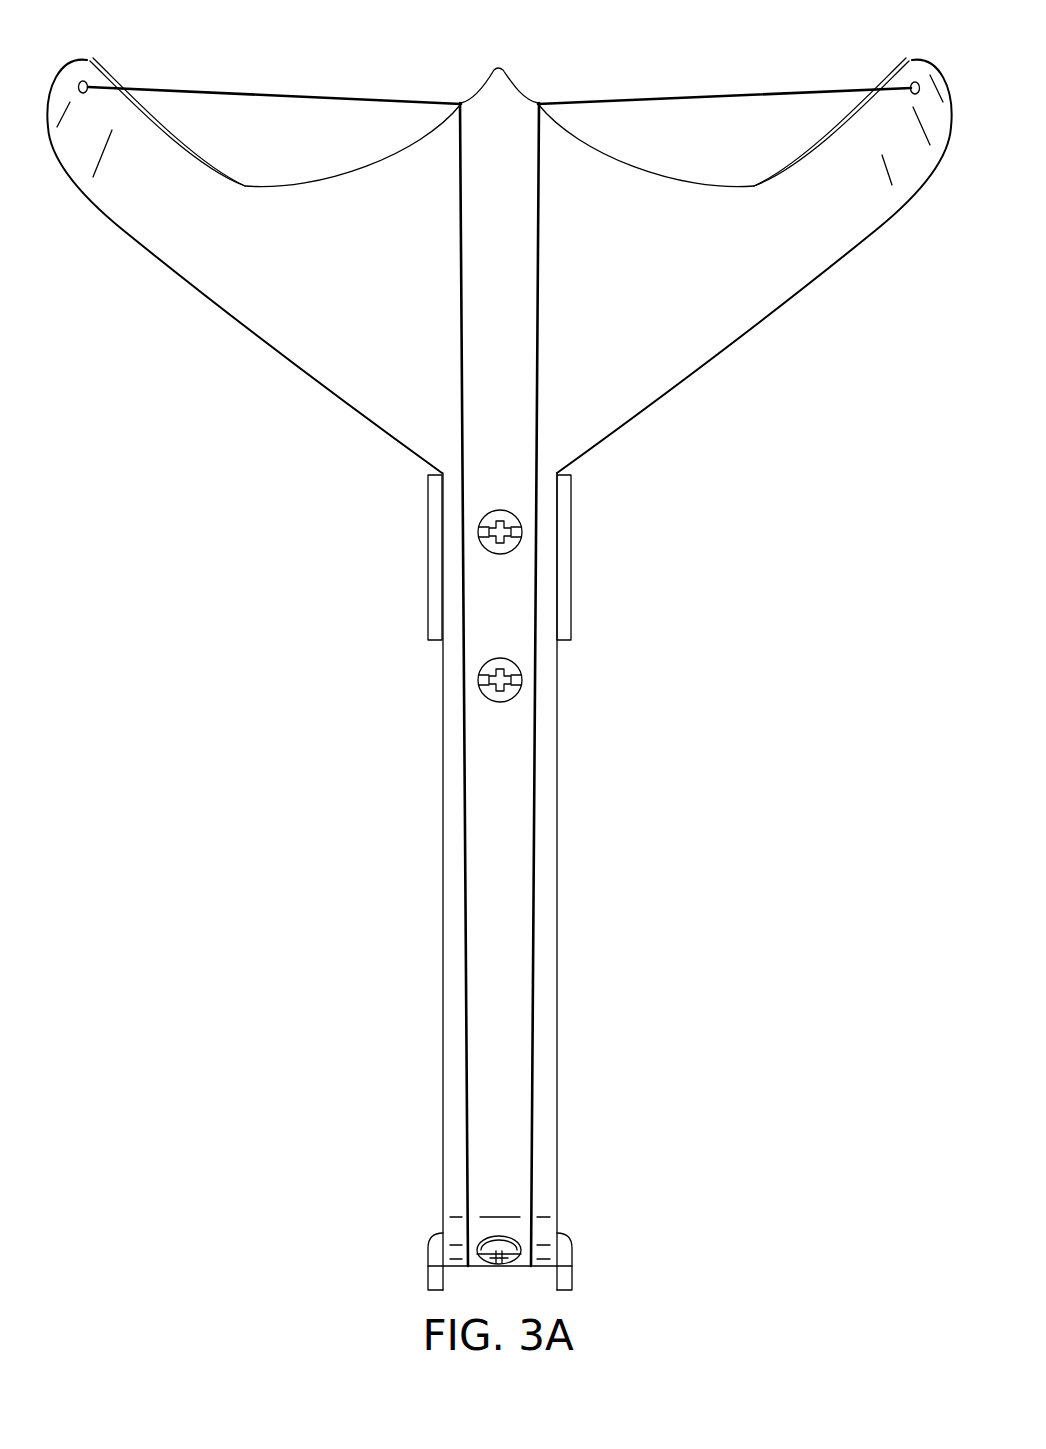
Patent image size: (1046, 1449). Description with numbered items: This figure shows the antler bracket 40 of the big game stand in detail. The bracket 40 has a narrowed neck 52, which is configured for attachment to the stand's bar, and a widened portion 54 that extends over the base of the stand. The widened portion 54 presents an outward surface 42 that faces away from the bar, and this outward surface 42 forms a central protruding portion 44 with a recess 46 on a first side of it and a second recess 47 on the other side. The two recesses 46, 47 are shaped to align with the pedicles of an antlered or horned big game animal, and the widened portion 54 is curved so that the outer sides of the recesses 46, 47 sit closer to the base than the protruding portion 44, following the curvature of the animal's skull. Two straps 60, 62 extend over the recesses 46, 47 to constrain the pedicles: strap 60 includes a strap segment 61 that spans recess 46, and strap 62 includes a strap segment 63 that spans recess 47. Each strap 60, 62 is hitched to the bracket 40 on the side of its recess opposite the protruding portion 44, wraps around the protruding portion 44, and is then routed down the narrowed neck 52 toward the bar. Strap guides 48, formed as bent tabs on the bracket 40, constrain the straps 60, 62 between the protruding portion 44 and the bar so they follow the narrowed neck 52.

The bracket 40 is at (297, 375).
The outward surface 42 is at (832, 155).
The protruding portion 44 is at (500, 68).
The recess 46 is at (257, 187).
The recess 47 is at (706, 187).
The strap guides 48 is at (428, 558).
The narrowed neck 52 is at (443, 960).
The widened portion 54 is at (765, 310).
The strap 60 is at (540, 355).
The strap segment 61 is at (280, 97).
The strap 62 is at (460, 408).
The strap segment 63 is at (760, 95).